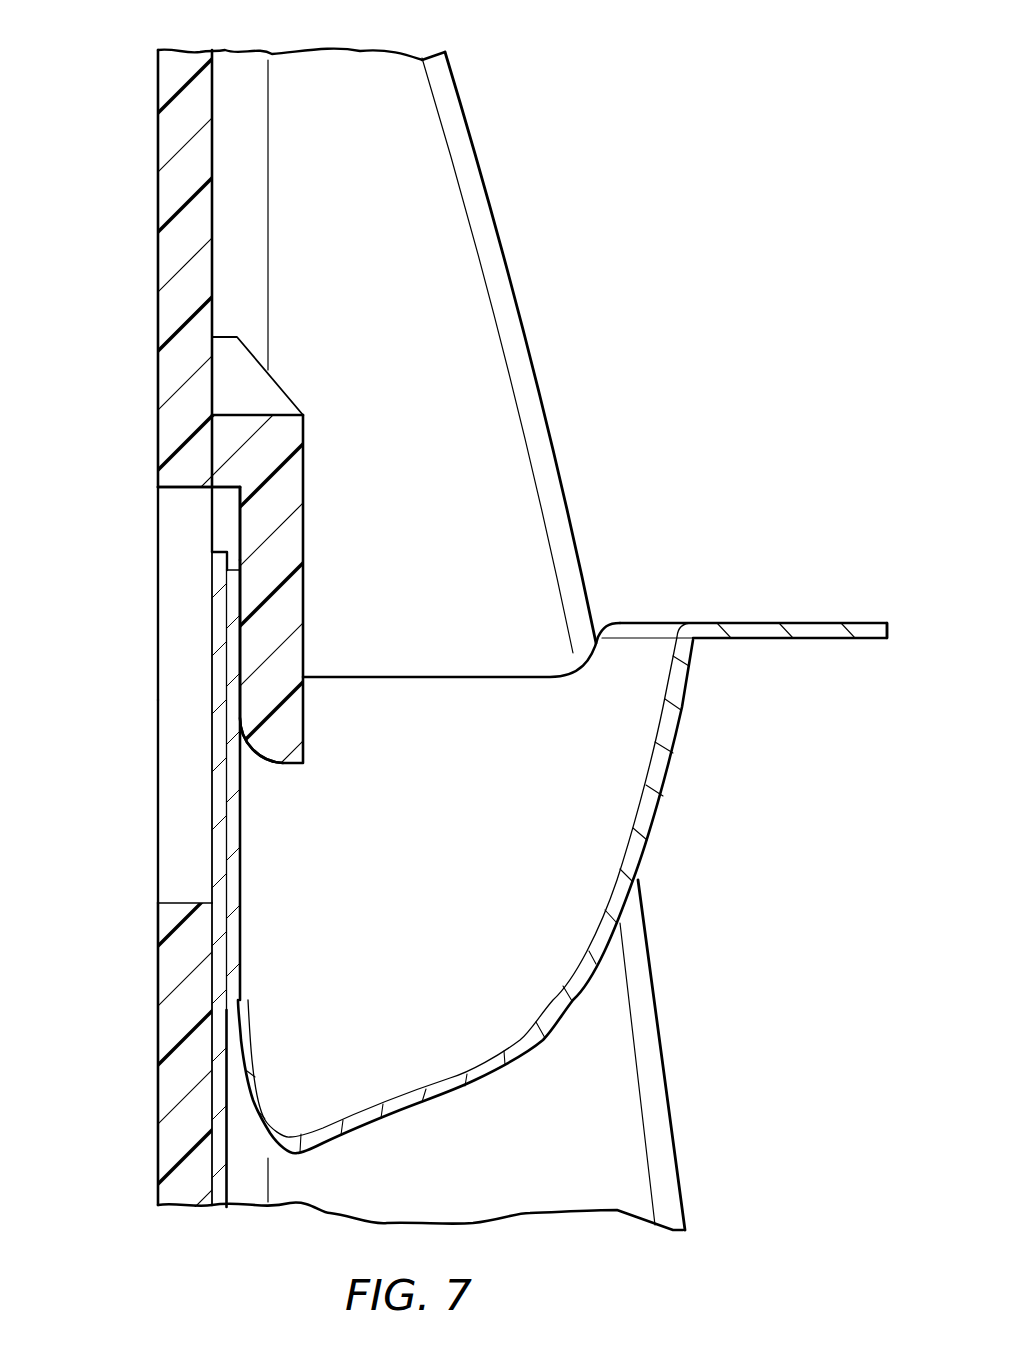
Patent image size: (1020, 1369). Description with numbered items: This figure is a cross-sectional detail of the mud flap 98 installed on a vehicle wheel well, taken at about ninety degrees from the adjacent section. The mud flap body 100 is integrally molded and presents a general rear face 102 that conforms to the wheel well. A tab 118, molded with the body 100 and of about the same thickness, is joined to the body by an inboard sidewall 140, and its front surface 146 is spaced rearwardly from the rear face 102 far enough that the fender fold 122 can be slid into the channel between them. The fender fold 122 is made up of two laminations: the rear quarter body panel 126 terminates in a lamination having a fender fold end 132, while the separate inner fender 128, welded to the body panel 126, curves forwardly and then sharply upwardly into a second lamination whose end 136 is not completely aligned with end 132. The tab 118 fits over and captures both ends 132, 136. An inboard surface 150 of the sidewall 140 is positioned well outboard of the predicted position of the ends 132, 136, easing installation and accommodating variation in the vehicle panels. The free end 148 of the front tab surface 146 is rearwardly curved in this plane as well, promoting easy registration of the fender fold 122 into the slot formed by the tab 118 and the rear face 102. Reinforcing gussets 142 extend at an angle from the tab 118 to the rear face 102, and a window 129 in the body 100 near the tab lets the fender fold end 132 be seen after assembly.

The mud flap 98 is at (121, 246).
The body 100 is at (158, 1089).
The general rear face 102 is at (213, 72).
The tab 118 is at (305, 717).
The fender fold 122 is at (180, 805).
The body panel 126 is at (226, 1183).
The inner fender 128 is at (675, 733).
The window 129 is at (173, 627).
The fender fold end 132 is at (230, 570).
The end 136 is at (240, 553).
The inboard sidewall 140 is at (283, 423).
The reinforcing gusset 142 is at (249, 350).
The front surface 146 is at (222, 512).
The end 148 is at (263, 763).
The inboard surface 150 is at (172, 492).